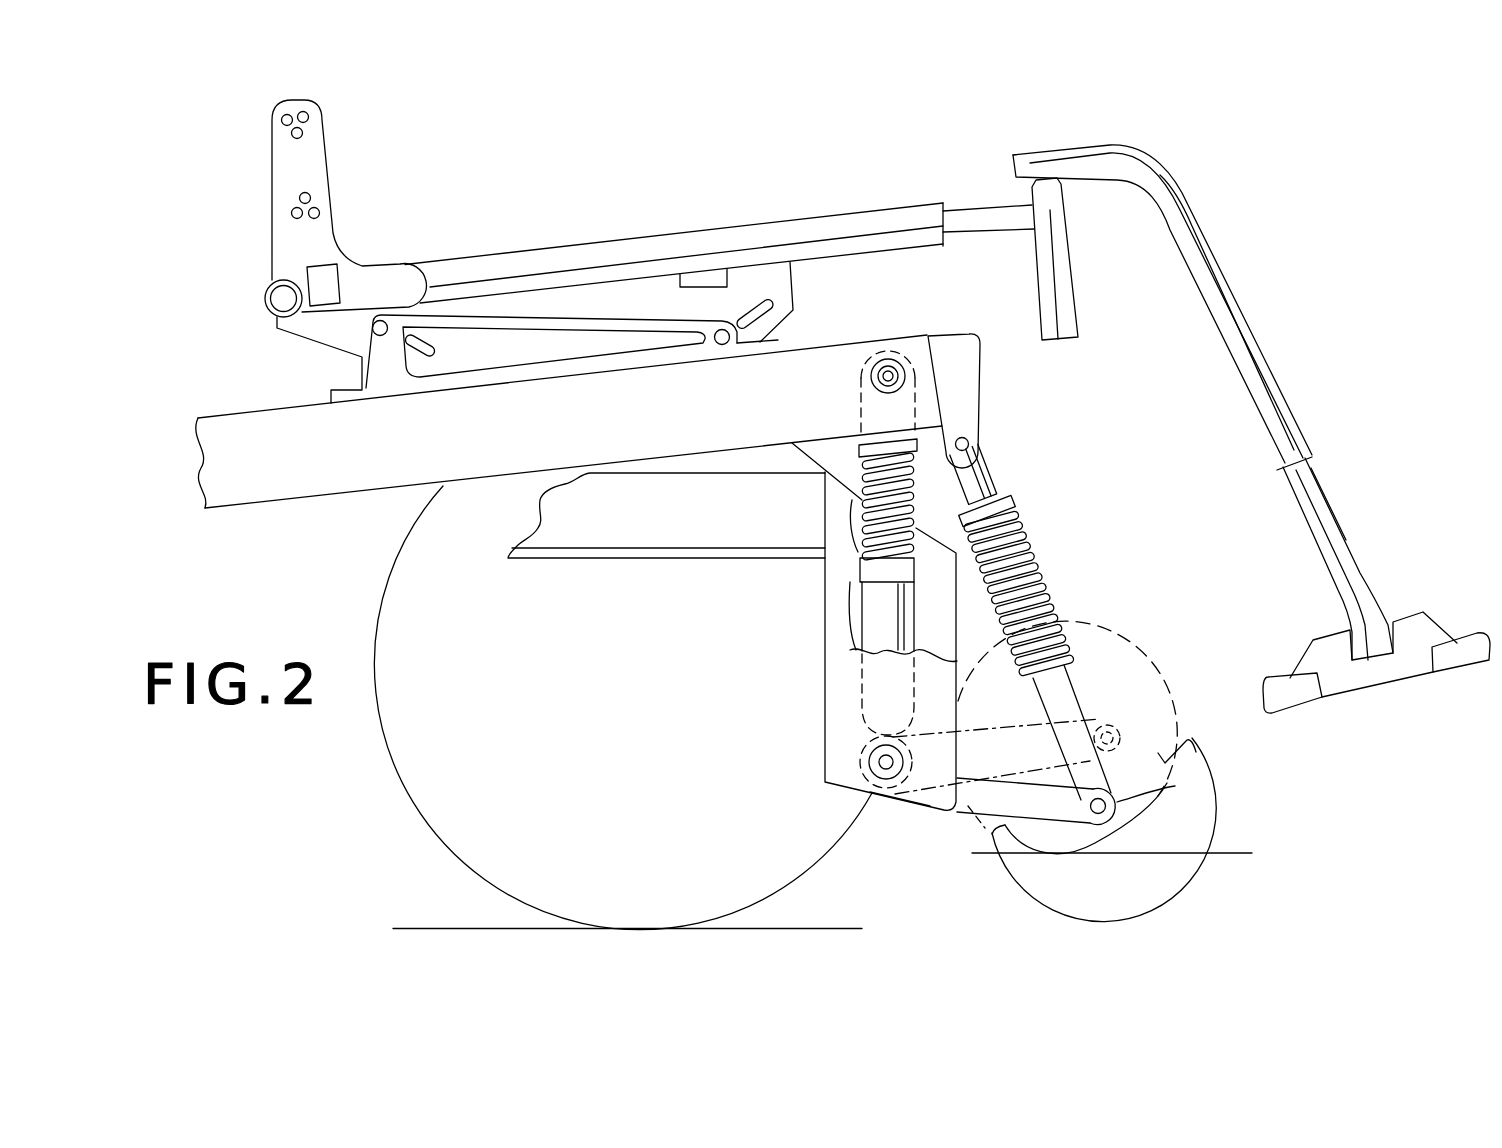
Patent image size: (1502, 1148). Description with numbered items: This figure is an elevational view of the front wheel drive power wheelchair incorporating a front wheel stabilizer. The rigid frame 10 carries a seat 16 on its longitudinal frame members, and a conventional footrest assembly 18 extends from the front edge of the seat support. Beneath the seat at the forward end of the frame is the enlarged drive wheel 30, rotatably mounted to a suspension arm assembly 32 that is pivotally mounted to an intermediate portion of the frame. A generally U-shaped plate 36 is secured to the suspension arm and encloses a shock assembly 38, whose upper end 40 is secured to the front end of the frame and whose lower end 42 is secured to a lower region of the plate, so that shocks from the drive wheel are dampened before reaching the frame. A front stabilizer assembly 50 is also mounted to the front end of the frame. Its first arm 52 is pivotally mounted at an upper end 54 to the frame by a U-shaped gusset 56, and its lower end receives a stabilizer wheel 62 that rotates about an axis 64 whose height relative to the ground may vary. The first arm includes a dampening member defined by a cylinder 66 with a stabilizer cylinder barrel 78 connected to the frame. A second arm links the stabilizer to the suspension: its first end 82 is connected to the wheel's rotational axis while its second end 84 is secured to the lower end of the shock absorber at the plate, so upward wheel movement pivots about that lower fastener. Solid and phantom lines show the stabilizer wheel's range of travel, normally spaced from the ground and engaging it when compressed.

The rigid frame 10 is at (340, 476).
The seat 16 is at (287, 197).
The footrest assembly 18 is at (1241, 329).
The drive wheel 30 is at (396, 761).
The suspension arm assembly 32 is at (605, 531).
The U-shaped plate 36 is at (822, 680).
The shock assembly 38 is at (872, 608).
The upper end of shock assembly 40 is at (888, 368).
The lower end of shock assembly 42 is at (880, 763).
The front stabilizer assembly 50 is at (1115, 682).
The first arm 52 is at (1065, 713).
The upper end of first arm 54 is at (972, 442).
The U-shaped gusset 56 is at (968, 381).
The stabilizer wheel 62 is at (1175, 872).
The axis 64 is at (1175, 786).
The cylinder 66 is at (1063, 640).
The stabilizer cylinder barrel 78 is at (978, 476).
The first end of second arm 82 is at (1080, 823).
The second end of second arm 84 is at (908, 797).